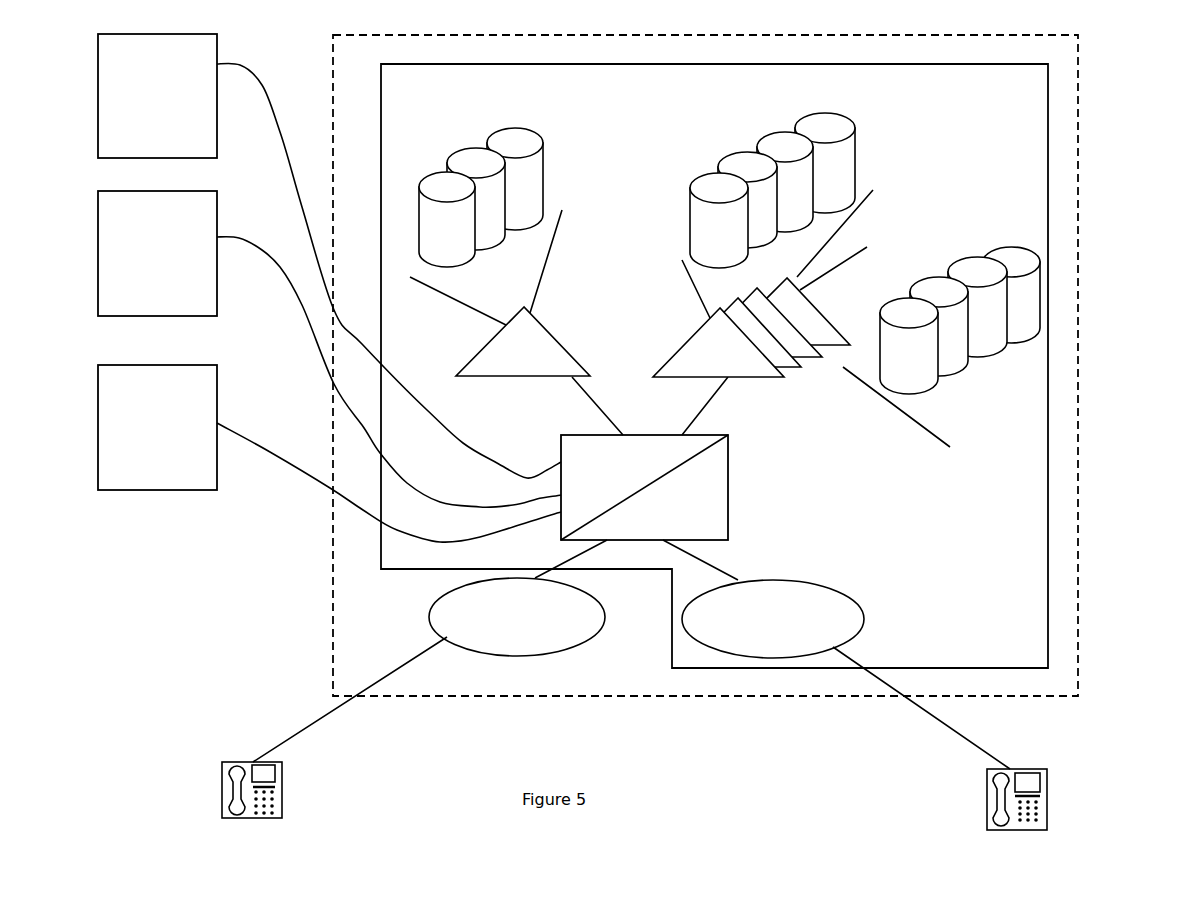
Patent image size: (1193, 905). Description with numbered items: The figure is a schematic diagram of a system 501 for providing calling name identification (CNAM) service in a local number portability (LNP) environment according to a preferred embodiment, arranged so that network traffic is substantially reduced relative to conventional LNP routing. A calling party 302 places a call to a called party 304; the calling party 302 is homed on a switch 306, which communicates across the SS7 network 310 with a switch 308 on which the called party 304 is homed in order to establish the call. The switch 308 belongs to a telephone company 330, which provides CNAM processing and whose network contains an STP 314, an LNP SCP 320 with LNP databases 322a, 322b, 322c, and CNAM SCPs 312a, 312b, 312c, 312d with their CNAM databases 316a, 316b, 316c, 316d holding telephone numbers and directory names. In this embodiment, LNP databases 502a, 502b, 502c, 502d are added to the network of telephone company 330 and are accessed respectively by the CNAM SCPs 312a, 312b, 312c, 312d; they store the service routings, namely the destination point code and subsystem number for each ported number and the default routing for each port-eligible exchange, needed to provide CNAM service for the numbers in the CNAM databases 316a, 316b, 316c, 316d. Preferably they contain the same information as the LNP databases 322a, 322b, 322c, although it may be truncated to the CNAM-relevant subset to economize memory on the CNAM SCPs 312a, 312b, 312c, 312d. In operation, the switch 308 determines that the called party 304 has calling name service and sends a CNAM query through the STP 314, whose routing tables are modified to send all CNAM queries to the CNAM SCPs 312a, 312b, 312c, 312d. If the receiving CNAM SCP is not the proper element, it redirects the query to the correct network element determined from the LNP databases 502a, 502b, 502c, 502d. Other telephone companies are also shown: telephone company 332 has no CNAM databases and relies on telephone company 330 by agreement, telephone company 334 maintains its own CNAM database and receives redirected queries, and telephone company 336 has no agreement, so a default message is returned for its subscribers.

The calling party 302 is at (222, 789).
The called party 304 is at (1047, 798).
The switch 306 is at (518, 657).
The switch 308 is at (772, 578).
The SS7 network 310 is at (1078, 513).
The CNAM SCP 312a is at (664, 368).
The CNAM SCP 312b is at (799, 369).
The CNAM SCP 312c is at (803, 358).
The CNAM SCP 312d is at (845, 333).
The STP 314 is at (728, 488).
The CNAM database 316a is at (693, 180).
The CNAM database 316b is at (730, 152).
The CNAM database 316c is at (777, 133).
The CNAM database 316d is at (823, 115).
The LNP SCP 320 is at (510, 377).
The LNP database 322a is at (430, 180).
The LNP database 322b is at (470, 150).
The LNP database 322c is at (496, 143).
The telephone company 330 is at (1048, 328).
The telephone company 332 is at (98, 425).
The telephone company 334 is at (98, 251).
The telephone company 336 is at (98, 97).
The system 501 is at (252, 598).
The LNP database 502a is at (890, 308).
The LNP database 502b is at (928, 278).
The LNP database 502c is at (958, 268).
The LNP database 502d is at (1017, 248).